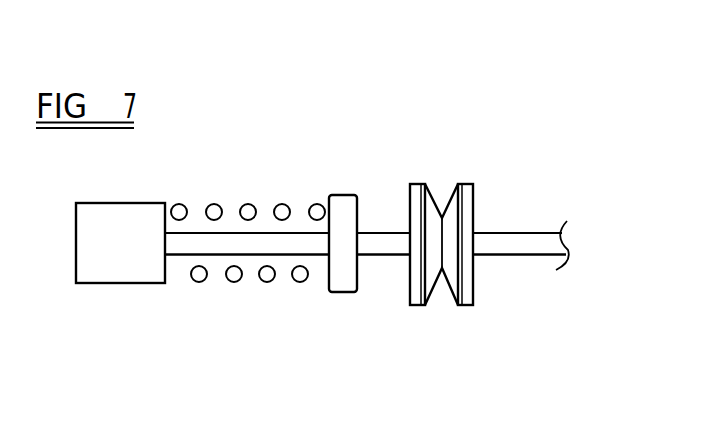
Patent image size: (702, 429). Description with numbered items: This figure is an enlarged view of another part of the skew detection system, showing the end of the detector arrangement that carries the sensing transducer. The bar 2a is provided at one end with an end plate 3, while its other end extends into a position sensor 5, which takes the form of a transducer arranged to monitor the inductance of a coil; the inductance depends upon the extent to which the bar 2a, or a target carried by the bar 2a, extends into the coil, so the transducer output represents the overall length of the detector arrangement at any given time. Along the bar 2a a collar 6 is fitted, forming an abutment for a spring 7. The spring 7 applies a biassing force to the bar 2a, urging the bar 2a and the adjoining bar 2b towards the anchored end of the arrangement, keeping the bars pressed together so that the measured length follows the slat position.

The position sensor 5 is at (107, 270).
The bar 2a is at (282, 200).
The bar 2b is at (528, 238).
The spring 7 is at (236, 282).
The collar 6 is at (348, 283).
The end plate 3 is at (415, 184).